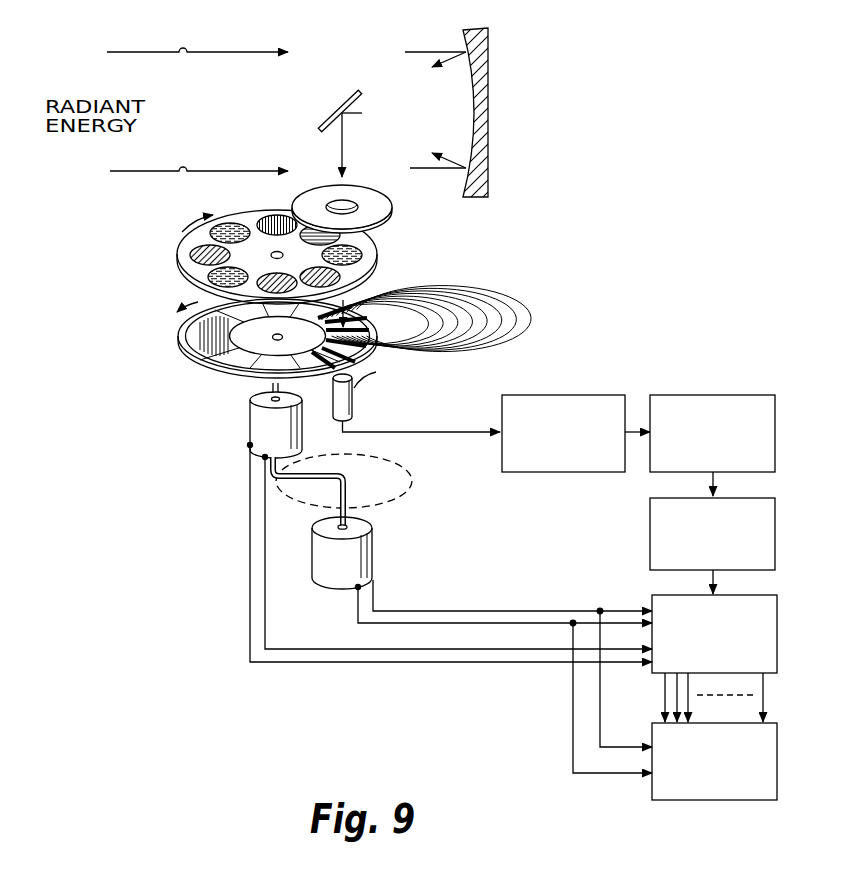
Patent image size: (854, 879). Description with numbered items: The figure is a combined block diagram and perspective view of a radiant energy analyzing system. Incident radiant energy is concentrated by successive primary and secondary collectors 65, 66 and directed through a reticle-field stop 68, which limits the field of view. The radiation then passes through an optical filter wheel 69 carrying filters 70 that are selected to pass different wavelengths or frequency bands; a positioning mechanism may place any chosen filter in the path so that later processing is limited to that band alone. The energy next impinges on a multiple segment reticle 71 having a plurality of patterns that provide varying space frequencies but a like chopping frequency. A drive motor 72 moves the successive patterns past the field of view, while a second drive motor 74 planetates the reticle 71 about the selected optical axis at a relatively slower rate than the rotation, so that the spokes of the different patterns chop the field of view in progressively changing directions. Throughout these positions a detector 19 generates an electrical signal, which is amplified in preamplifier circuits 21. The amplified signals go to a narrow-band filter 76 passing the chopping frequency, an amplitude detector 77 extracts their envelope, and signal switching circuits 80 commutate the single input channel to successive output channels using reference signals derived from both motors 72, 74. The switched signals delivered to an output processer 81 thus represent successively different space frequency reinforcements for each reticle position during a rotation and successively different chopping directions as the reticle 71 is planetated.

The primary collector 65 is at (503, 33).
The secondary collector 66 is at (351, 93).
The reticle-field stop 68 is at (391, 200).
The optical filter wheel 69 is at (378, 258).
The filters 70 is at (277, 215).
The multiple segment reticle 71 is at (372, 327).
The detector 19 is at (353, 409).
The drive motor 72 is at (250, 424).
The drive motor 74 is at (373, 553).
The preamplifier circuits 21 is at (595, 396).
The narrow-band filter 76 is at (751, 396).
The amplitude detector 77 is at (757, 499).
The signal switching circuits 80 is at (755, 596).
The output processer 81 is at (771, 723).